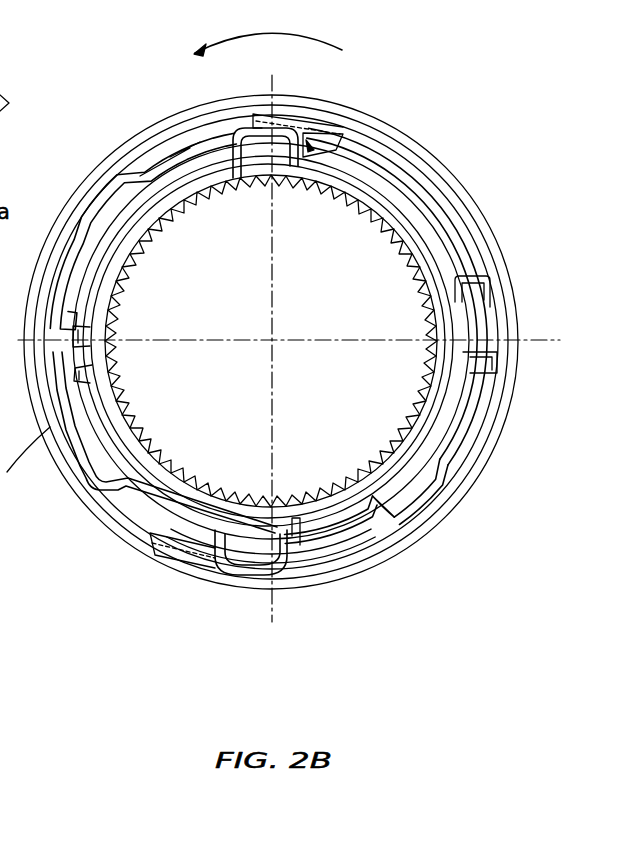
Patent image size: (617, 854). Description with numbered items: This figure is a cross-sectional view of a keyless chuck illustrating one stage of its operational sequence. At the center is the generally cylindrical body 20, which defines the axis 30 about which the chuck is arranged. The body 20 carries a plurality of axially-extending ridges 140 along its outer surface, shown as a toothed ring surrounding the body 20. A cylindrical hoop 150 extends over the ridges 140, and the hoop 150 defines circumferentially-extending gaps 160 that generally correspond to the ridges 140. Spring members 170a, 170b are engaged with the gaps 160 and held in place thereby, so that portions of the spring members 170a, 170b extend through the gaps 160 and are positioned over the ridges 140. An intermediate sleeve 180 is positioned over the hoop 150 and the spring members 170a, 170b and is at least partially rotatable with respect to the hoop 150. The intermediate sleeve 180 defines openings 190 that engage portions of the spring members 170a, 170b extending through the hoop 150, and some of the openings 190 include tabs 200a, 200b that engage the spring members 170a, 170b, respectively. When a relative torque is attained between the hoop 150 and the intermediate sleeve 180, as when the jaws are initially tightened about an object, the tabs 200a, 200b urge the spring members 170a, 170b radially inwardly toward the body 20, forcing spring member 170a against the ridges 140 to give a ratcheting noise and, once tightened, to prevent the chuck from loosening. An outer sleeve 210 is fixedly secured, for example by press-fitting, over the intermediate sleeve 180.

The body 20 is at (357, 297).
The axis 30 is at (270, 343).
The axially-extending ridges 140 is at (422, 421).
The hoop 150 is at (458, 262).
The circumferentially-extending gaps 160 is at (345, 152).
The spring member 170a is at (456, 323).
The spring member 170b is at (118, 452).
The intermediate sleeve 180 is at (453, 217).
The openings 190 is at (197, 130).
The tab 200a is at (340, 136).
The tab 200b is at (157, 532).
The outer sleeve 210 is at (432, 163).